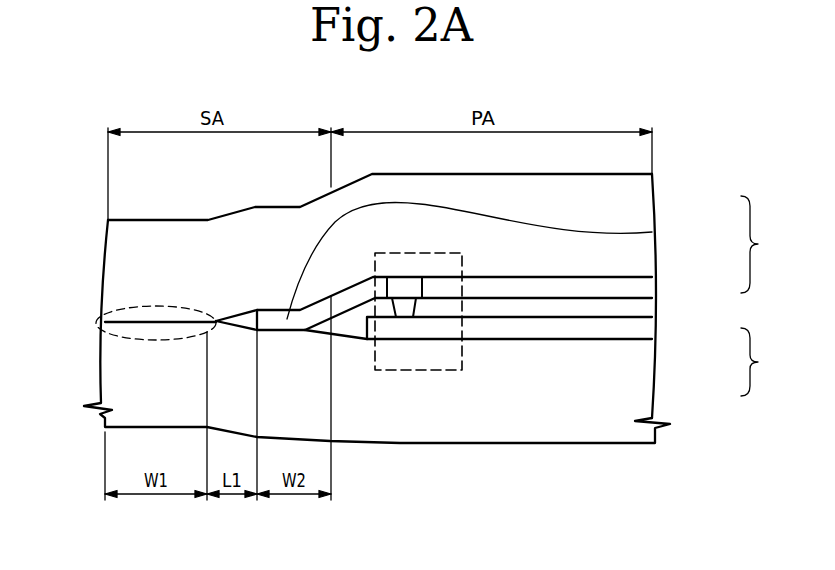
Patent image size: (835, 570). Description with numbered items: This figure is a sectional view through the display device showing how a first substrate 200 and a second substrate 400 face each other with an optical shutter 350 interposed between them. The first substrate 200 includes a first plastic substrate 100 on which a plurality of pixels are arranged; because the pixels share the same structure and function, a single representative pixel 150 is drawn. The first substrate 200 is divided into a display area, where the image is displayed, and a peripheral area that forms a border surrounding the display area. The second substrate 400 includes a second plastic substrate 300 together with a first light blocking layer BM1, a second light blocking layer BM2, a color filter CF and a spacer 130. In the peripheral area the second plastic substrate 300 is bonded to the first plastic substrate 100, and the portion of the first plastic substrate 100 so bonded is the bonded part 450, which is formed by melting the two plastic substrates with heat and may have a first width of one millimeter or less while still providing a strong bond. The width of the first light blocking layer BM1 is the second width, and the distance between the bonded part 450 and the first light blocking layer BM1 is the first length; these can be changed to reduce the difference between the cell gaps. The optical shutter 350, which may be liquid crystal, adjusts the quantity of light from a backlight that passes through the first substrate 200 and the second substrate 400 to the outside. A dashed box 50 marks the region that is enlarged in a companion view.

The second plastic substrate 300 is at (640, 208).
The first light blocking layer BM1 is at (652, 232).
The second light blocking layer BM2 is at (422, 290).
The color filter CF is at (640, 287).
The second substrate 400 is at (768, 244).
The optical shutter 350 is at (640, 308).
The pixel 150 is at (640, 328).
The first plastic substrate 100 is at (640, 385).
The first substrate 200 is at (768, 362).
The bonded part 450 is at (143, 308).
The spacer 130 is at (405, 312).
The contact region 50 is at (432, 372).